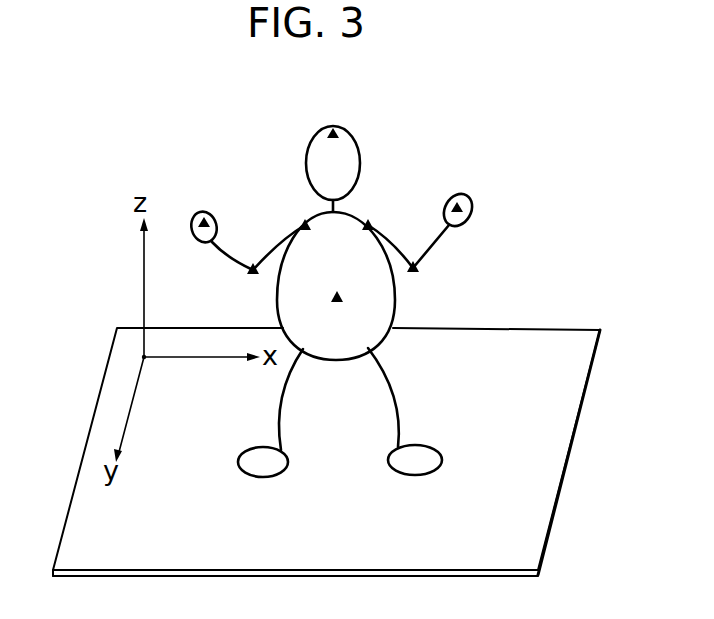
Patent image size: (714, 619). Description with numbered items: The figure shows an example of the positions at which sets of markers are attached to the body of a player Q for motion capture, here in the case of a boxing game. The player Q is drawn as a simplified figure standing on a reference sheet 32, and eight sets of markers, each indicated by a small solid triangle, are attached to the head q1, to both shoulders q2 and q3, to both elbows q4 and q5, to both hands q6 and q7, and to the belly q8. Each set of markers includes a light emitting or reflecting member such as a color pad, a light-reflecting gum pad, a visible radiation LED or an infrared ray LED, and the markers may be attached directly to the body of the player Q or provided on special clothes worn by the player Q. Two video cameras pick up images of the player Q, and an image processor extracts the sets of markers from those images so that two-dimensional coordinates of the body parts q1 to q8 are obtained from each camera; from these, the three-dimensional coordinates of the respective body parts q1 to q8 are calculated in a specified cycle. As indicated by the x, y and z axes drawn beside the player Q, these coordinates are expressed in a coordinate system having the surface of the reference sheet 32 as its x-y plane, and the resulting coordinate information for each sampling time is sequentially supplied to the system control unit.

The player Q is at (360, 158).
The head q1 is at (329, 114).
The shoulder q2 is at (294, 203).
The shoulder q3 is at (378, 203).
The elbow q4 is at (243, 249).
The elbow q5 is at (413, 248).
The hand q6 is at (209, 198).
The hand q7 is at (473, 188).
The belly q8 is at (336, 276).
The reference sheet 32 is at (507, 337).